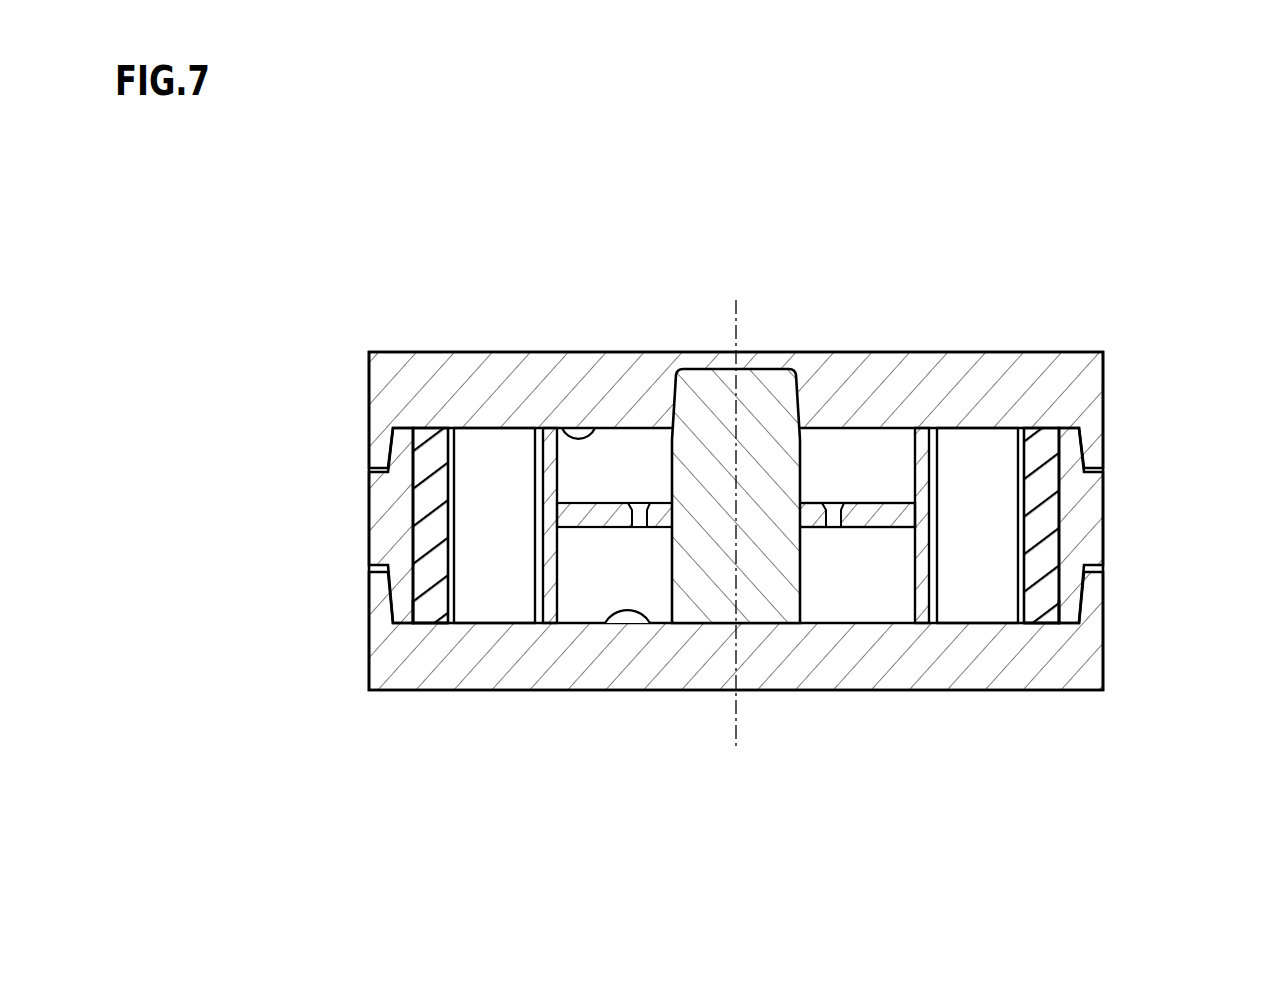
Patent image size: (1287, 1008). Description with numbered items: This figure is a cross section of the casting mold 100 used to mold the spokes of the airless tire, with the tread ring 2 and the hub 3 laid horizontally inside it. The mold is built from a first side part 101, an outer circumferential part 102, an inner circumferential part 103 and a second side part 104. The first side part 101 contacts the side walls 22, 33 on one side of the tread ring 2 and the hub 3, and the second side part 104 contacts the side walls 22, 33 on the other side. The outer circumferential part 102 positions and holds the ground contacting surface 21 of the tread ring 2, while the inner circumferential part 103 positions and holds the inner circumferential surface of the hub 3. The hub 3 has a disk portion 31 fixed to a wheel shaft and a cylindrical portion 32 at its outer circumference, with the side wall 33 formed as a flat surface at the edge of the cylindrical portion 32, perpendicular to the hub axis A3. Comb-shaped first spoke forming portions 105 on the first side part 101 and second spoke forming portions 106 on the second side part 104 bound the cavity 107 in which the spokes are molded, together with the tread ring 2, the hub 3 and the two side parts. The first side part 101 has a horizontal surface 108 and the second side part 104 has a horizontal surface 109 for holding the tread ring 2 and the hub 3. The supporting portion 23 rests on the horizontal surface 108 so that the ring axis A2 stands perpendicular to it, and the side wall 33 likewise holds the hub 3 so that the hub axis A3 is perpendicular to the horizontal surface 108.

The casting mold 100 is at (1148, 328).
The first side part 101 is at (840, 665).
The outer circumferential part 102 is at (383, 513).
The inner circumferential part 103 is at (703, 452).
The second side part 104 is at (600, 370).
The first spoke forming portions 105 is at (488, 597).
The second spoke forming portions 106 is at (983, 598).
The cavity 107 is at (496, 460).
The horizontal surface 108 is at (630, 610).
The horizontal surface 109 is at (573, 428).
The tread ring 2 is at (1038, 437).
The ground contacting surface 21 is at (412, 575).
The side wall 22 is at (432, 625).
The supporting portion 23 is at (1050, 625).
The hub 3 is at (607, 498).
The disk portion 31 is at (880, 522).
The cylindrical portion 32 is at (913, 458).
The side wall 33 is at (548, 625).
The ring axis A2 is at (737, 725).
The hub axis A3 is at (742, 325).